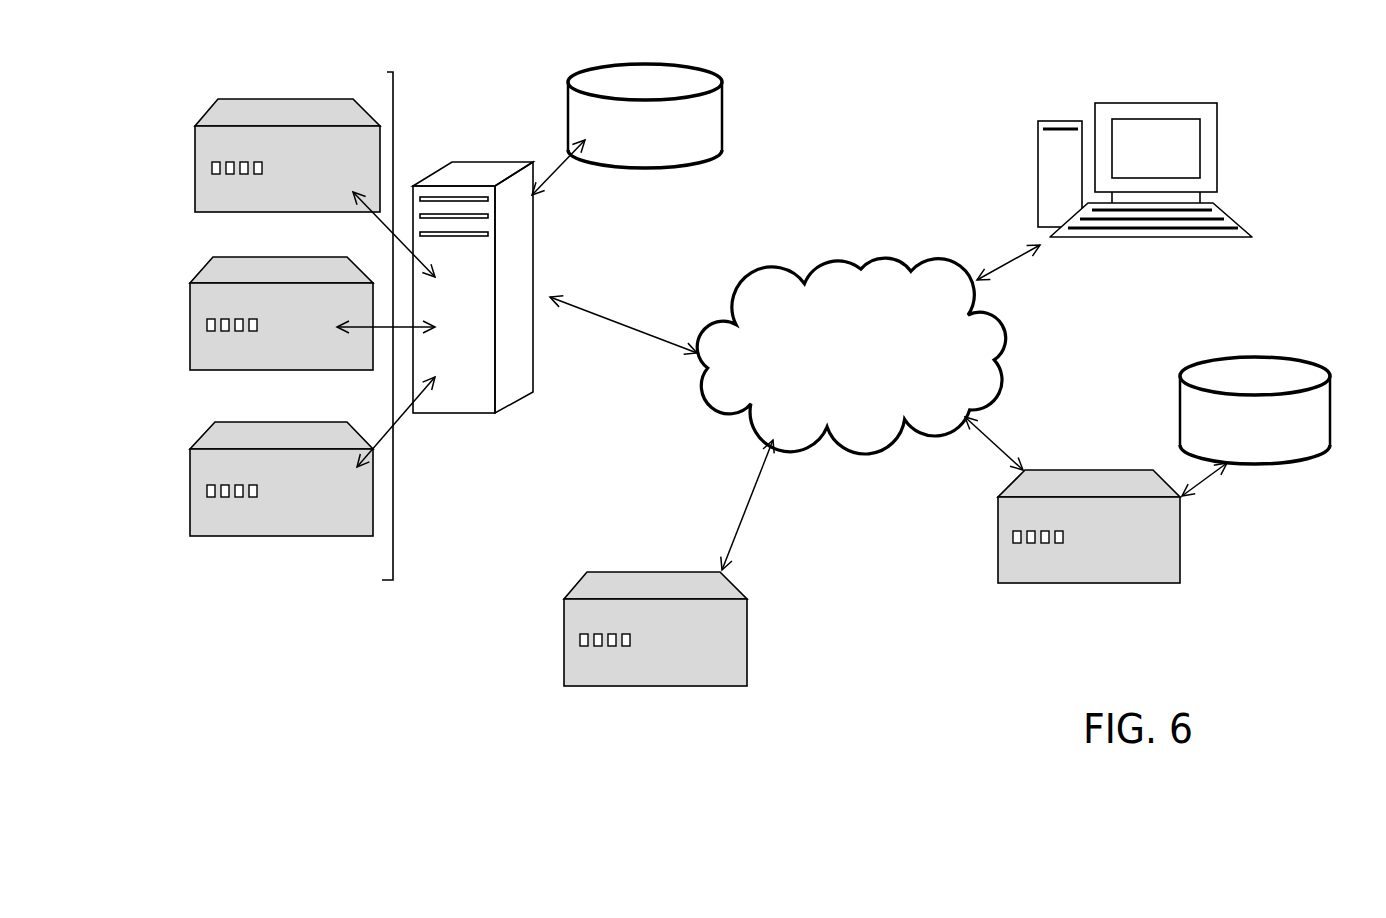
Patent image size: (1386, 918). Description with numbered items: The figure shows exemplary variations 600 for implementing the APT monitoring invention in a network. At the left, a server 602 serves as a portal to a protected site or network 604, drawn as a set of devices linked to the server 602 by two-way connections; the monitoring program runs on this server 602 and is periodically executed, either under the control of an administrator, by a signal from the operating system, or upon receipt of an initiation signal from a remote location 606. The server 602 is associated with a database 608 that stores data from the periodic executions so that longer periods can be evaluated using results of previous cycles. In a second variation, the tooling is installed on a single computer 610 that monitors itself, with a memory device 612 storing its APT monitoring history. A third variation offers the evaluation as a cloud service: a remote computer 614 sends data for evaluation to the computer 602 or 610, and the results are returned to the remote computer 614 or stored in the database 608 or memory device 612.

The exemplary variations 600 is at (1290, 670).
The server 602 is at (520, 358).
The protected site or network 604 is at (400, 108).
The remote location 606 is at (578, 675).
The database 608 is at (708, 138).
The single computer 610 is at (1027, 580).
The memory device 612 is at (1262, 358).
The remote computer 614 is at (1068, 120).